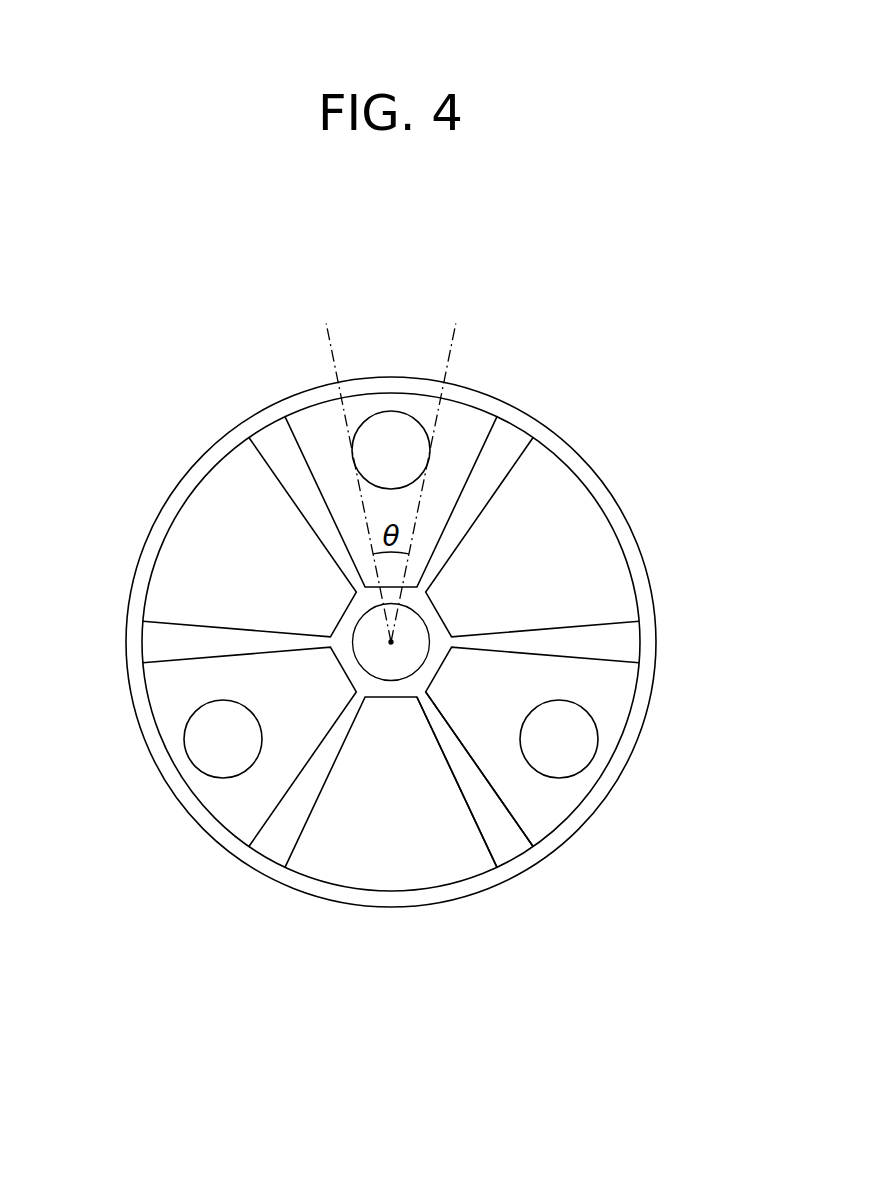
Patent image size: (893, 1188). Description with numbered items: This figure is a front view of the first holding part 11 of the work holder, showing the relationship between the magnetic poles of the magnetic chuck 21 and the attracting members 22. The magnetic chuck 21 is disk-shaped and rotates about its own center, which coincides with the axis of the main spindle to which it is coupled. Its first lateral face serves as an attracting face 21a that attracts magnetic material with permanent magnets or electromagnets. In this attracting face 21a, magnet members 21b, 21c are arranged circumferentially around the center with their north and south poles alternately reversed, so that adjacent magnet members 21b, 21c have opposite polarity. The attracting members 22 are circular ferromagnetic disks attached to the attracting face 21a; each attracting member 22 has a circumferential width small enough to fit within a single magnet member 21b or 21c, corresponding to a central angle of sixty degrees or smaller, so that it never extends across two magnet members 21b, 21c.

The first holding part 11 is at (585, 430).
The magnetic chuck 21 is at (600, 480).
The attracting face 21a is at (497, 825).
The magnet member 21b is at (420, 395).
The magnet member 21c is at (192, 492).
The attracting member 22 is at (375, 413).